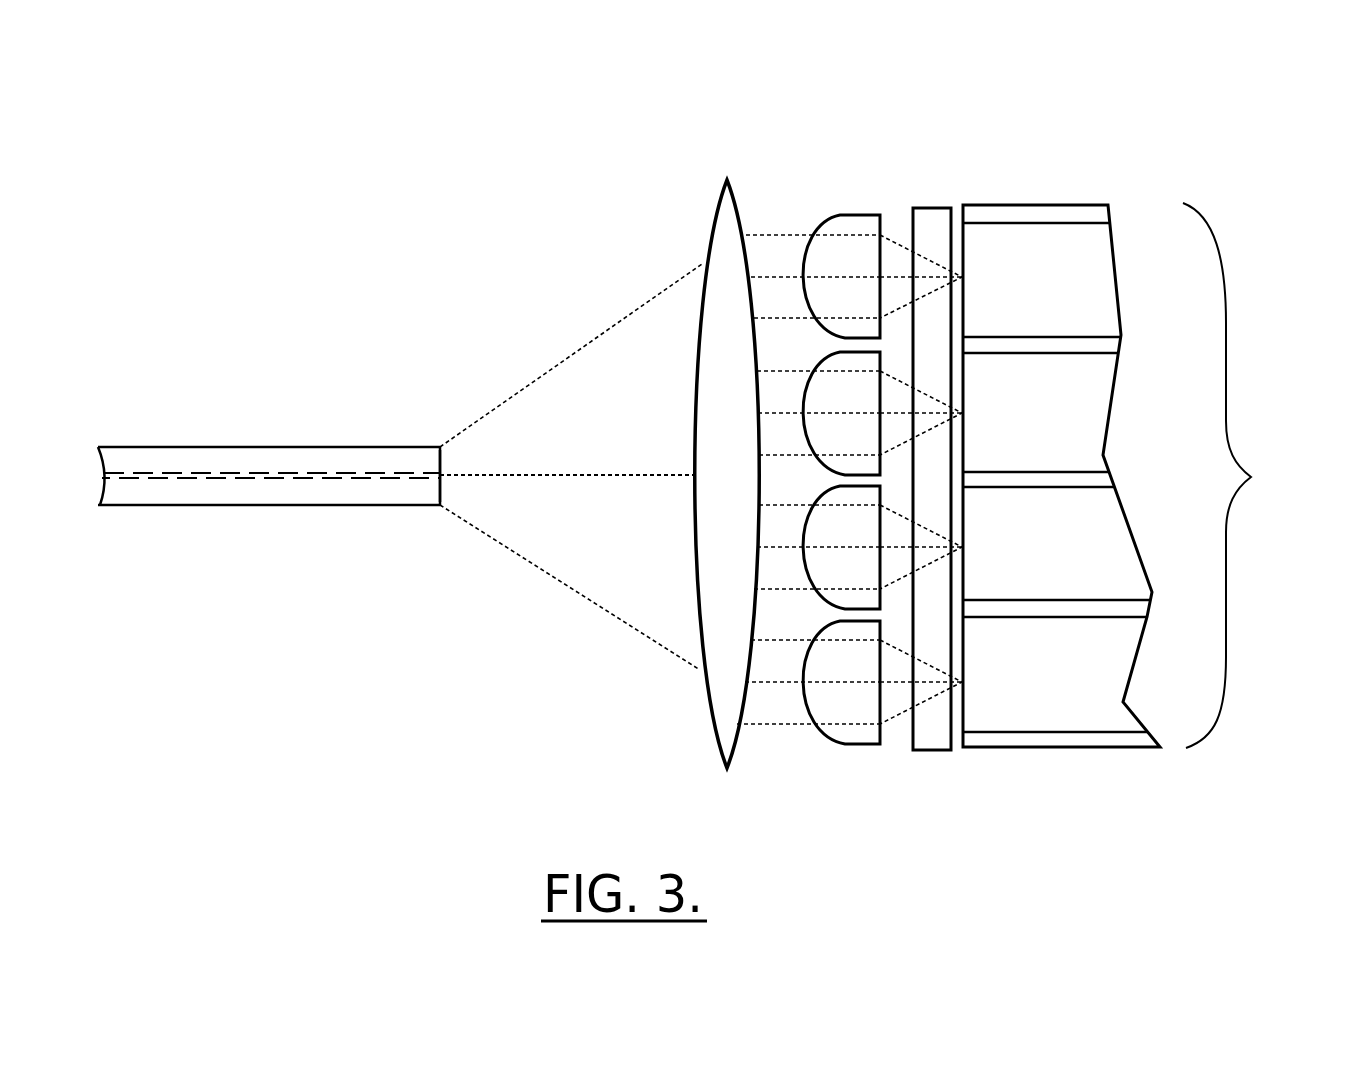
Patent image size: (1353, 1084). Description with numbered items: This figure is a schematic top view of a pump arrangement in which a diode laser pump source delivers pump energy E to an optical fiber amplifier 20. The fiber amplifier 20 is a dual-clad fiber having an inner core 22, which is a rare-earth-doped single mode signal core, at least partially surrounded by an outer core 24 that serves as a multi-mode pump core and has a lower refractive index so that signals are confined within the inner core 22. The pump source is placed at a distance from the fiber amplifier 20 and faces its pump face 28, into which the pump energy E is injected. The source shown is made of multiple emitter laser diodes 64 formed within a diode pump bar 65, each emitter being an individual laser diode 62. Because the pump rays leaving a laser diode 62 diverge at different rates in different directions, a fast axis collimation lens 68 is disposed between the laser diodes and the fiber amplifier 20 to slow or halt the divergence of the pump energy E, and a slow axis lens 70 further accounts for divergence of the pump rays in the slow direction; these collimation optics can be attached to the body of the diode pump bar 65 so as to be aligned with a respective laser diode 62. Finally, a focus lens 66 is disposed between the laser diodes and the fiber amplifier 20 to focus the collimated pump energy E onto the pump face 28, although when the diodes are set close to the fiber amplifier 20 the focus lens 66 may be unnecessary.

The optical fiber amplifier 20 is at (311, 457).
The inner core 22 is at (254, 512).
The outer core 24 is at (263, 444).
The pump face 28 is at (497, 464).
The pump energy E is at (577, 588).
The focus lens 66 is at (704, 438).
The fast axis collimation lens 68 is at (820, 416).
The slow axis lens 70 is at (904, 439).
The diode pump bar 65 is at (1033, 182).
The single-emitter laser diode 62 is at (1058, 481).
The multiple emitter laser diodes 64 is at (1266, 460).